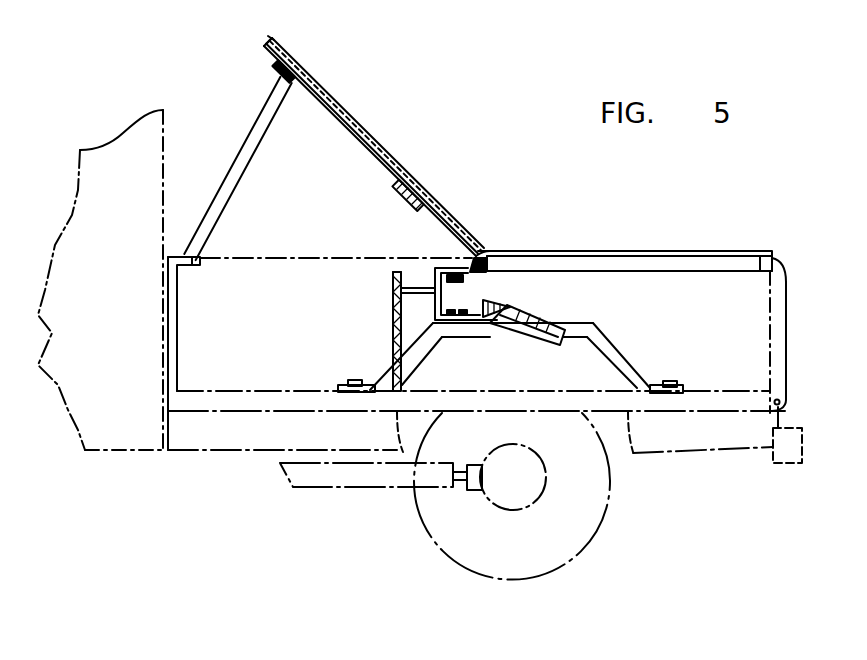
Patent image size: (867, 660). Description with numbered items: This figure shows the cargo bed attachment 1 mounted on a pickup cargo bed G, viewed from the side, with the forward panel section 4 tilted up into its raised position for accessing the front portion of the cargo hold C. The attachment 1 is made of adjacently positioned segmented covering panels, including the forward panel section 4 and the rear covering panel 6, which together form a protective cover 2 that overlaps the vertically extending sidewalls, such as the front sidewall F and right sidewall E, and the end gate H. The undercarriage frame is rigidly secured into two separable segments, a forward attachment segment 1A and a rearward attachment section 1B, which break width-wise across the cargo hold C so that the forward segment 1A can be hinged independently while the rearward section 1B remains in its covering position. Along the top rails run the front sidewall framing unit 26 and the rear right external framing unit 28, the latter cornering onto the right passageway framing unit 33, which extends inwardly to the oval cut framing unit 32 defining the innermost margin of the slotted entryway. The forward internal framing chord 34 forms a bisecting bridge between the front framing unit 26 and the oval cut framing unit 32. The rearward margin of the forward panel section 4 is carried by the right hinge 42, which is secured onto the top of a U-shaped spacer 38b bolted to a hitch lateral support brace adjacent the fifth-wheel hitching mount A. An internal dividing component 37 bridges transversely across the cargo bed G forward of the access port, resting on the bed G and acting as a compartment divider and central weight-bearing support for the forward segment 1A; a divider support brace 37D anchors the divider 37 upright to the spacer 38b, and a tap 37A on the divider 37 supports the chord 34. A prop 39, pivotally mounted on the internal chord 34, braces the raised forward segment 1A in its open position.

The cargo bed attachment 1 is at (260, 85).
The forward attachment segment 1A is at (376, 149).
The rearward attachment section 1B is at (598, 249).
The protective cover 2 is at (502, 244).
The forward panel section 4 is at (307, 82).
The covering panel 6 is at (695, 250).
The front sidewall framing unit 26 is at (273, 62).
The rear right external framing unit 28 is at (773, 262).
The oval cut framing unit 32 is at (440, 210).
The right passageway framing unit 33 is at (663, 265).
The forward internal framing chord 34 is at (347, 147).
The internal dividing component 37 is at (390, 357).
The tap 37A is at (392, 290).
The divider support brace 37D is at (406, 278).
The U-shaped spacer 38b is at (452, 281).
The prop 39 is at (237, 187).
The right hinge 42 is at (452, 245).
The fifth-wheel hitching mount A is at (540, 315).
The cargo hold C is at (732, 317).
The right sidewall E is at (730, 368).
The front sidewall F is at (178, 348).
The cargo bed G is at (242, 385).
The end gate H is at (783, 330).